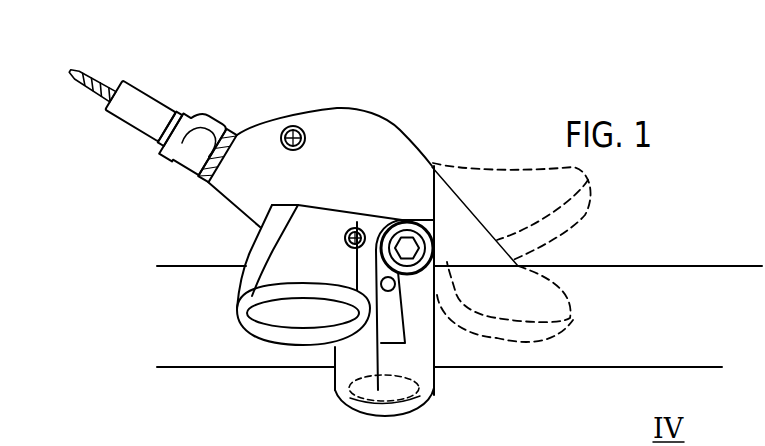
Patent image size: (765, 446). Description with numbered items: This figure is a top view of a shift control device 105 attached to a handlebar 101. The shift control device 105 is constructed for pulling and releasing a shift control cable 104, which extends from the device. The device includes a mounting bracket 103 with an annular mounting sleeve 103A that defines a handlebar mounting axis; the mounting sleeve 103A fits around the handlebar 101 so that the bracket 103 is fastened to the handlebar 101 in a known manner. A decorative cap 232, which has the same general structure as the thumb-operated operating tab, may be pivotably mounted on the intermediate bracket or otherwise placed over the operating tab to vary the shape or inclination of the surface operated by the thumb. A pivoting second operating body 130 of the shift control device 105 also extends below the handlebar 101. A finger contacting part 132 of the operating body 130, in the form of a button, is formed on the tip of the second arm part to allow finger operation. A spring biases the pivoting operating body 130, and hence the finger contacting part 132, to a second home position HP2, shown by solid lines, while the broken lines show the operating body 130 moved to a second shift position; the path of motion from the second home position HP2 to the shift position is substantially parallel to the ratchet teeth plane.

The handlebar 101 is at (459, 288).
The mounting bracket 103 is at (363, 226).
The annular mounting sleeve 103A is at (416, 361).
The shift control cable 104 is at (93, 55).
The shift control device 105 is at (200, 104).
The pivoting second operating body 130 is at (539, 242).
The finger contacting part 132 is at (507, 333).
The second home position HP2 is at (572, 327).
The decorative cap 232 is at (391, 410).